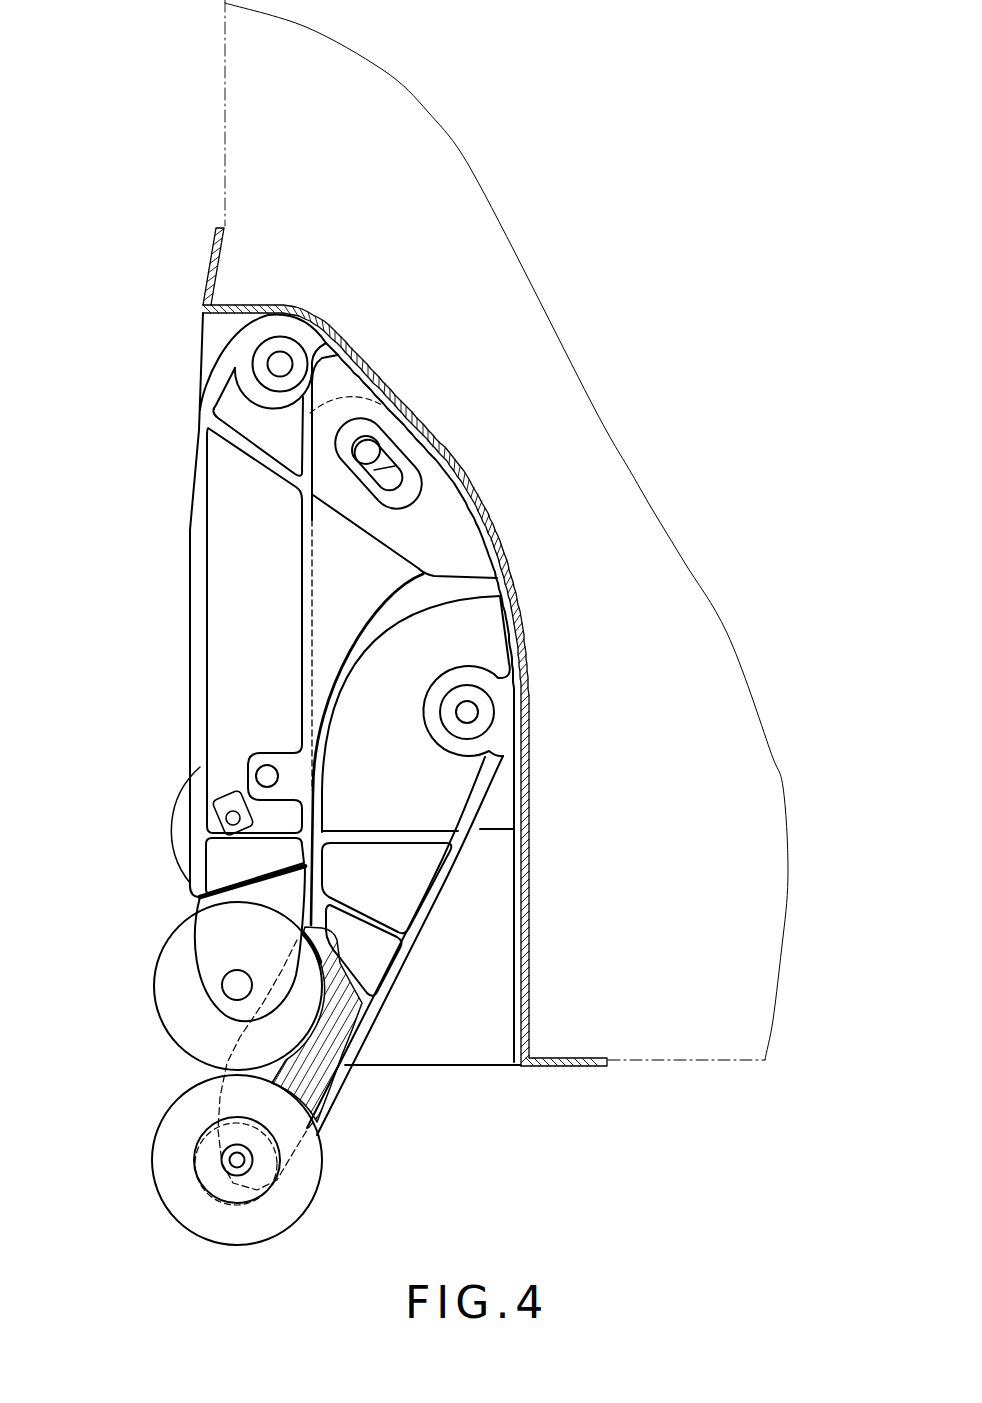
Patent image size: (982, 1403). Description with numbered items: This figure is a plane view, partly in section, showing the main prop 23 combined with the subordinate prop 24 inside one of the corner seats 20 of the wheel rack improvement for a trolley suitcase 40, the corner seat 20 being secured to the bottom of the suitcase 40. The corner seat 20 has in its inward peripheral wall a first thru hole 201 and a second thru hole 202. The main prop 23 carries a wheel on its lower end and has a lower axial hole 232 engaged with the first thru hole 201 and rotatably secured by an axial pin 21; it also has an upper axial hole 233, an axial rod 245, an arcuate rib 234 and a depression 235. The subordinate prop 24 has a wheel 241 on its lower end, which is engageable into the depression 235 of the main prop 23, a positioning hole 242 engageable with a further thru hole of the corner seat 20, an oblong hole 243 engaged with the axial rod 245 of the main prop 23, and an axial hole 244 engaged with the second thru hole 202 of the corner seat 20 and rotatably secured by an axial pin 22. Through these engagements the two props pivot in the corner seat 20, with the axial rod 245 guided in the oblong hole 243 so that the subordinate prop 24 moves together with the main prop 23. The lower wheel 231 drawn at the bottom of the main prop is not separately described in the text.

The suitcase 40 is at (225, 116).
The corner seat 20 is at (528, 862).
The axial pin 21 is at (483, 714).
The axial pin 22 is at (263, 375).
The main prop 23 is at (455, 793).
The subordinate prop 24 is at (213, 702).
The first thru hole 201 is at (487, 733).
The second thru hole 202 is at (297, 347).
The lower wheel 231 is at (170, 1147).
The lower axial hole 232 is at (483, 687).
The upper axial hole 233 is at (383, 456).
The arcuate rib 234 is at (463, 580).
The depression 235 is at (307, 1033).
The wheel 241 is at (173, 1023).
The positioning hole 242 is at (263, 777).
The oblong hole 243 is at (403, 482).
The axial hole 244 is at (257, 353).
The axial rod 245 is at (363, 449).